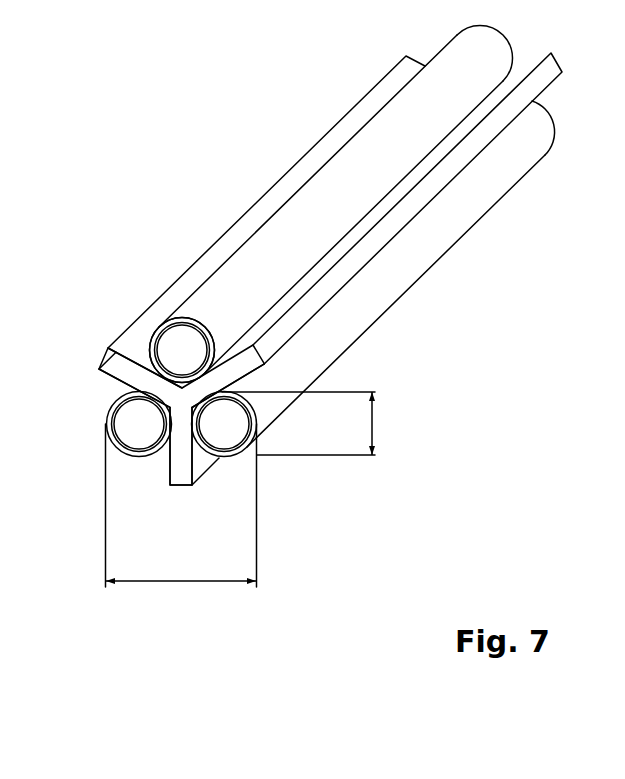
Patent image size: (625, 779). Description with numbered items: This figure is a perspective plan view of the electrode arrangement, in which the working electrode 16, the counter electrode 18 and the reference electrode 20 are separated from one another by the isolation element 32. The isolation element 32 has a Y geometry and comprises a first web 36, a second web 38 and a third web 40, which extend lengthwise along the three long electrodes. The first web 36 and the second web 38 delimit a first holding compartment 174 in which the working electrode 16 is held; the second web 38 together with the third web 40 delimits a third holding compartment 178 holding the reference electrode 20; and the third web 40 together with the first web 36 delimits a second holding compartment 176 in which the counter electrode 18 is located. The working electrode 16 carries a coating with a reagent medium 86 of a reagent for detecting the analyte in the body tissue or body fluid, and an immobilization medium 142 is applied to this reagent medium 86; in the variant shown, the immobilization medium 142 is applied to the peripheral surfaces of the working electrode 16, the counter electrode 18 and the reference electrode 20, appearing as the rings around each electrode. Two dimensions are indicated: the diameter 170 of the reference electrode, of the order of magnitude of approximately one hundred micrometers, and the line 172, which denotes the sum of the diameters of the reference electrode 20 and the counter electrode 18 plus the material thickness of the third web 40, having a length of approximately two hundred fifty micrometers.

The working electrode 16 is at (172, 345).
The counter electrode 18 is at (137, 438).
The reference electrode 20 is at (213, 440).
The isolation element 32 is at (100, 374).
The first web 36 is at (104, 350).
The second web 38 is at (247, 360).
The third web 40 is at (182, 470).
The reagent medium 86 is at (166, 326).
The immobilization medium 142 is at (198, 322).
The diameter 170 is at (376, 425).
The line 172 is at (180, 583).
The first holding compartment 174 is at (137, 353).
The second holding compartment 176 is at (120, 378).
The third holding compartment 178 is at (199, 452).